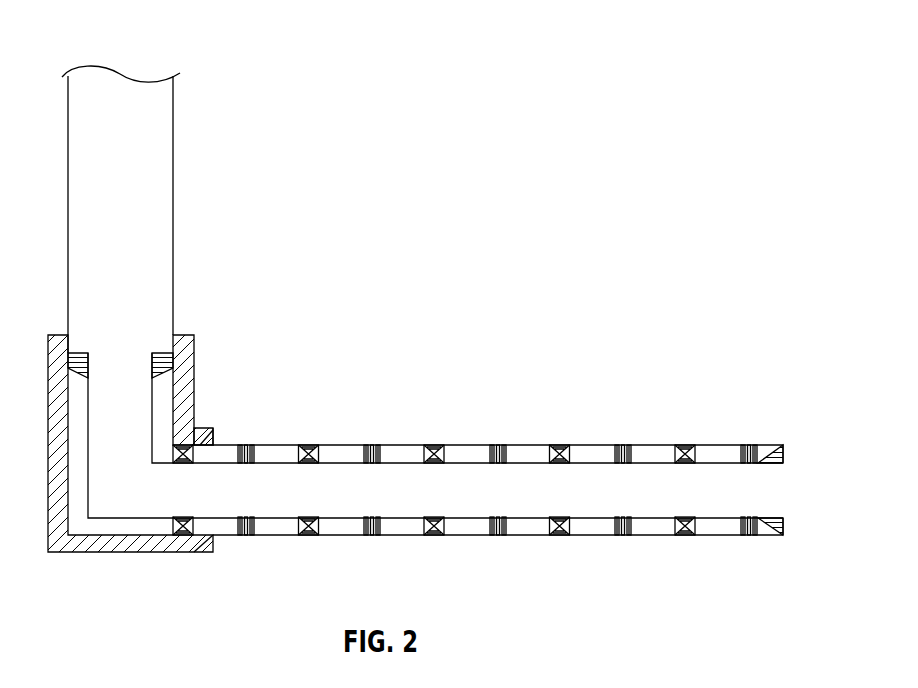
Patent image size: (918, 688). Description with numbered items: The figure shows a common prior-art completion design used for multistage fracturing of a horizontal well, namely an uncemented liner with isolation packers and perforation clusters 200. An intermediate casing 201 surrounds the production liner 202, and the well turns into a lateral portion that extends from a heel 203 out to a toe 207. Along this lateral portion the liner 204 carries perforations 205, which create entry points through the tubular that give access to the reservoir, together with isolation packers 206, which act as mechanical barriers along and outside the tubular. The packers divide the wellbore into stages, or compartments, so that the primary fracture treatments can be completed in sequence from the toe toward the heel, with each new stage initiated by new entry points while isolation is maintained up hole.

The uncemented liner with isolation packers and perforation clusters 200 is at (423, 282).
The intermediate casing 201 is at (182, 135).
The production liner 202 is at (206, 373).
The heel 203 is at (207, 420).
The liner 204 is at (270, 437).
The perforations 205 is at (368, 437).
The isolation packers 206 is at (560, 433).
The toe 207 is at (765, 437).